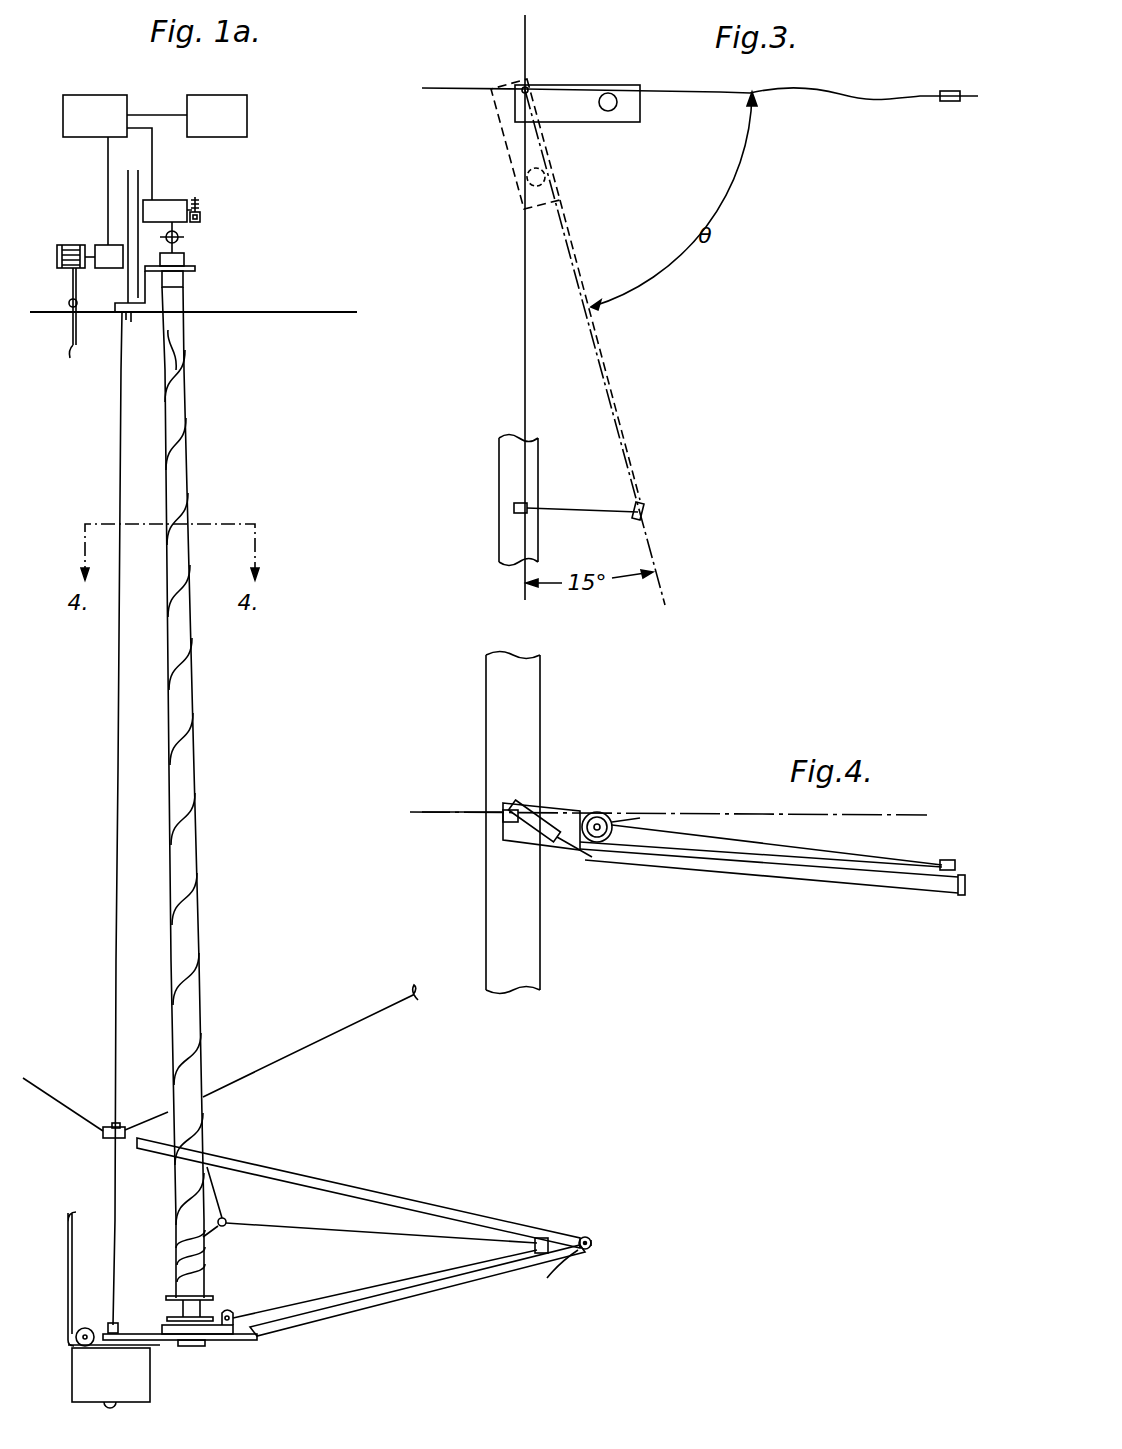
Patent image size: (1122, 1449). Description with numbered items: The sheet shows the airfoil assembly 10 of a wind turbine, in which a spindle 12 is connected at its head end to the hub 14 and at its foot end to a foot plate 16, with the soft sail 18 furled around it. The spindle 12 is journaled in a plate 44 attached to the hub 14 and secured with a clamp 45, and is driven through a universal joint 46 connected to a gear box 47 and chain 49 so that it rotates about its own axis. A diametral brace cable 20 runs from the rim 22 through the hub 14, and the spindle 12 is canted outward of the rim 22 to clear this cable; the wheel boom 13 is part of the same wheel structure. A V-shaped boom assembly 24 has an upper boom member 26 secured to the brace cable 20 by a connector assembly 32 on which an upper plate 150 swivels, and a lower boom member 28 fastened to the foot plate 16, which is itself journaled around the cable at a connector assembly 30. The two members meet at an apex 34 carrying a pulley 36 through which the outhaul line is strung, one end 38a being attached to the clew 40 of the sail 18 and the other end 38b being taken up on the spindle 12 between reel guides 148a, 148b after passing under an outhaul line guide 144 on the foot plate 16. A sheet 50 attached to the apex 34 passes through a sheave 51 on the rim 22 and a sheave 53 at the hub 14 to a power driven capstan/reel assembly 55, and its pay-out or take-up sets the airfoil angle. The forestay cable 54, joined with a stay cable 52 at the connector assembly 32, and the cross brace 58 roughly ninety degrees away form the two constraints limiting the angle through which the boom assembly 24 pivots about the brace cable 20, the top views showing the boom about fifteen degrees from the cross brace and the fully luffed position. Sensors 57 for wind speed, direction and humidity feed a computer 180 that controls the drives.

In FIG. 1a, the airfoil assembly 10 is at (232, 761).
In FIG. 1a, the spindle 12 is at (185, 305).
In FIG. 3, the spindle 12 is at (610, 112).
In FIG. 4, the spindle 12 is at (597, 822).
In FIG. 1a, the wheel boom 13 is at (308, 314).
In FIG. 1a, the hub 14 is at (122, 300).
In FIG. 1a, the foot plate 16 is at (220, 1341).
In FIG. 3, the foot plate 16 is at (588, 85).
In FIG. 4, the foot plate 16 is at (530, 842).
In FIG. 1a, the sail 18 is at (212, 1193).
In FIG. 3, the sail 18 is at (605, 272).
In FIG. 4, the sail 18 is at (615, 820).
In FIG. 1a, the diametral brace cable 20 is at (118, 702).
In FIG. 3, the diametral brace cable 20 is at (522, 88).
In FIG. 4, the diametral brace cable 20 is at (500, 812).
In FIG. 1a, the rim 22 is at (145, 1390).
In FIG. 3, the rim 22 is at (500, 481).
In FIG. 4, the rim 22 is at (486, 918).
In FIG. 1a, the boom assembly 24 is at (477, 1204).
In FIG. 1a, the upper boom member 26 is at (322, 1180).
In FIG. 4, the upper boom member 26 is at (768, 872).
In FIG. 1a, the lower boom member 28 is at (405, 1302).
In FIG. 4, the lower boom member 28 is at (808, 866).
In FIG. 1a, the connector assembly 30 is at (106, 1322).
In FIG. 1a, the connector assembly 32 is at (108, 1139).
In FIG. 4, the connector assembly 32 is at (510, 828).
In FIG. 1a, the apex 34 is at (595, 1240).
In FIG. 4, the apex 34 is at (956, 896).
In FIG. 1a, the pulley 36 is at (545, 1238).
In FIG. 4, the pulley 36 is at (945, 860).
In FIG. 1a, the outhaul line end 38a is at (383, 1230).
In FIG. 4, the outhaul line end 38a is at (720, 838).
In FIG. 1a, the outhaul line end 38b is at (330, 1296).
In FIG. 4, the outhaul line end 38b is at (775, 850).
In FIG. 1a, the clew 40 is at (228, 1220).
In FIG. 4, the clew 40 is at (622, 826).
In FIG. 1a, the plate 44 is at (195, 272).
In FIG. 1a, the clamp 45 is at (129, 318).
In FIG. 1a, the universal joint 46 is at (180, 240).
In FIG. 1a, the gear box 47 is at (175, 200).
In FIG. 1a, the chain 49 is at (205, 218).
In FIG. 1a, the sheet 50 is at (570, 1297).
In FIG. 3, the sheet 50 is at (574, 508).
In FIG. 1a, the sheave 51 is at (78, 1320).
In FIG. 3, the sheave 51 is at (515, 508).
In FIG. 1a, the stay cable 52 is at (53, 1093).
In FIG. 3, the stay cable 52 is at (444, 86).
In FIG. 4, the stay cable 52 is at (460, 813).
In FIG. 1a, the sheave 53 is at (69, 302).
In FIG. 1a, the forestay cable 54 is at (337, 1032).
In FIG. 3, the forestay cable 54 is at (815, 100).
In FIG. 4, the forestay cable 54 is at (885, 815).
In FIG. 1a, the capstan/reel assembly 55 is at (102, 245).
In FIG. 1a, the sensors 57 is at (247, 98).
In FIG. 3, the cross brace 58 is at (523, 353).
In FIG. 4, the cross brace 58 is at (540, 950).
In FIG. 4, the outhaul line guide 144 is at (622, 834).
In FIG. 1a, the reel guide 148a is at (172, 1297).
In FIG. 4, the reel guide 148a is at (590, 857).
In FIG. 1a, the reel guide 148b is at (170, 1318).
In FIG. 1a, the upper plate 150 is at (157, 1133).
In FIG. 4, the upper plate 150 is at (530, 812).
In FIG. 1a, the computer 180 is at (105, 95).